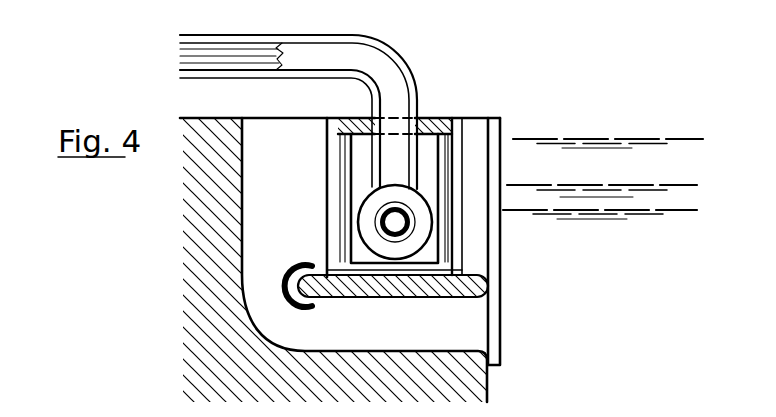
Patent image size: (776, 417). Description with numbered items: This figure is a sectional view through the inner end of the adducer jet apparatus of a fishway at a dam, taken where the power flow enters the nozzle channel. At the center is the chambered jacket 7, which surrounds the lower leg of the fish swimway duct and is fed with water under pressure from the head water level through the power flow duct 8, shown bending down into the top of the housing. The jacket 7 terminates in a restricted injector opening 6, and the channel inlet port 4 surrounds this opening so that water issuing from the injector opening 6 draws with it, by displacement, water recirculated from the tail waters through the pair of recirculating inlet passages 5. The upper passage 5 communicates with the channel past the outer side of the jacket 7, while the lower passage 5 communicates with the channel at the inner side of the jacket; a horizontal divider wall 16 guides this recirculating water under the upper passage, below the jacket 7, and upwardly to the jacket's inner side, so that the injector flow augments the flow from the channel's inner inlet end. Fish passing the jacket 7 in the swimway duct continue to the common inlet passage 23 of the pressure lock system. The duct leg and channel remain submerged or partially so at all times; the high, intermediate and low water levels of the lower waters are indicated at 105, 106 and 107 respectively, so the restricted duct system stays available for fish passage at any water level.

The channel inlet port 4 is at (431, 141).
The recirculating inlet passage 5 is at (395, 5).
The injector opening 6 is at (393, 209).
The chambered jacket 7 is at (372, 201).
The power flow duct 8 is at (414, 89).
The horizontal divider wall 16 is at (452, 290).
The common inlet passage 23 is at (380, 224).
The high water level 105 is at (697, 139).
The intermediate water level 106 is at (697, 185).
The low water level 107 is at (697, 210).